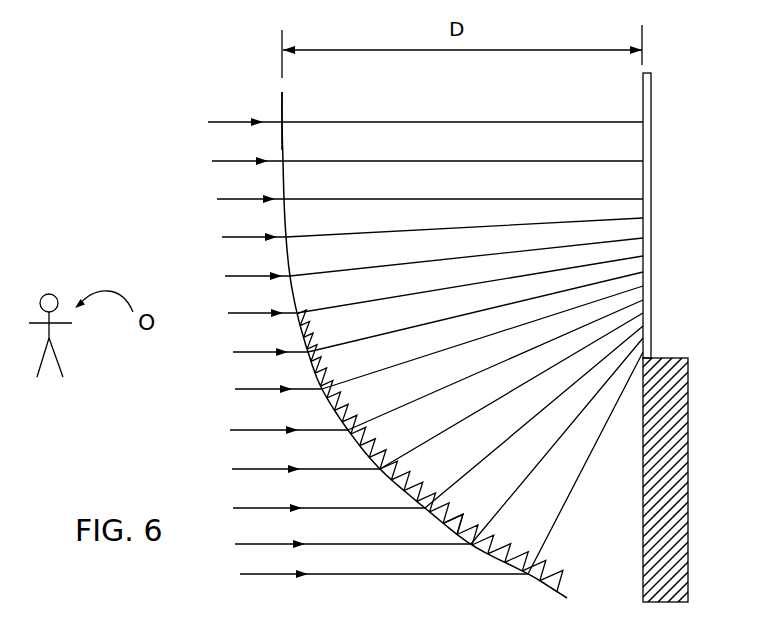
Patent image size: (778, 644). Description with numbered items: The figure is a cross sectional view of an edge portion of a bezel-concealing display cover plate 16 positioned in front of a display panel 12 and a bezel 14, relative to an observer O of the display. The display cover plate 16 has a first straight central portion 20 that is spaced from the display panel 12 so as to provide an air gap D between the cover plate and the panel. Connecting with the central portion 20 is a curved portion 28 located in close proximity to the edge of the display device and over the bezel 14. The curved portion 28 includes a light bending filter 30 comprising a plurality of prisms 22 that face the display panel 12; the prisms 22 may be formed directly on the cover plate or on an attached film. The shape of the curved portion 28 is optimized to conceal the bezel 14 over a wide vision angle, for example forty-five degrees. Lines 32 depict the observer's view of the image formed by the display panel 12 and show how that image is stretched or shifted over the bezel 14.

The display panel 12 is at (652, 107).
The bezel 14 is at (689, 400).
The bezel-concealing display cover plate 16 is at (290, 113).
The first straight central portion 20 is at (282, 145).
The prisms 22 is at (557, 583).
The curved portion 28 is at (445, 518).
The light bending filter 30 is at (468, 511).
The lines 32 is at (242, 432).